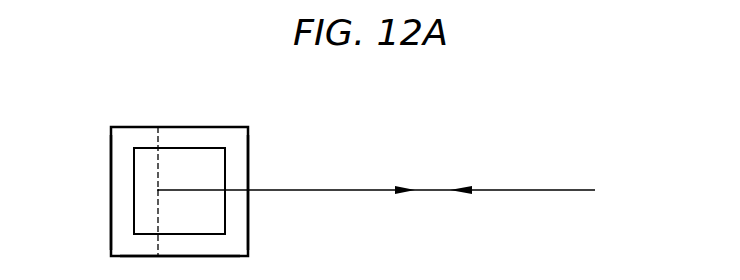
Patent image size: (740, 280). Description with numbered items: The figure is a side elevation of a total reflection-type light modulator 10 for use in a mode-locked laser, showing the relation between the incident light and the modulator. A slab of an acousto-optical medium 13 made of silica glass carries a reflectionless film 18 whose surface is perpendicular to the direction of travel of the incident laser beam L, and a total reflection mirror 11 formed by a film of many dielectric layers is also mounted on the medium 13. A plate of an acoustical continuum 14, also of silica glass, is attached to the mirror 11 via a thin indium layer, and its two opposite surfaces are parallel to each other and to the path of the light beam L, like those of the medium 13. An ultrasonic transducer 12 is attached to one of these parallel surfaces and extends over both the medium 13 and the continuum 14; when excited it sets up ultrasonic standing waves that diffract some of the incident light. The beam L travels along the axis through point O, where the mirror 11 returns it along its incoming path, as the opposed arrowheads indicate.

The total reflection-type light modulator 10 is at (242, 110).
The total reflection mirror 11 is at (155, 142).
The ultrasonic transducer 12 is at (190, 158).
The acousto-optical medium 13 is at (238, 143).
The acoustical continuum 14 is at (110, 167).
The reflectionless film 18 is at (248, 245).
The incident light beam L is at (555, 190).
The optical axis point O is at (248, 190).